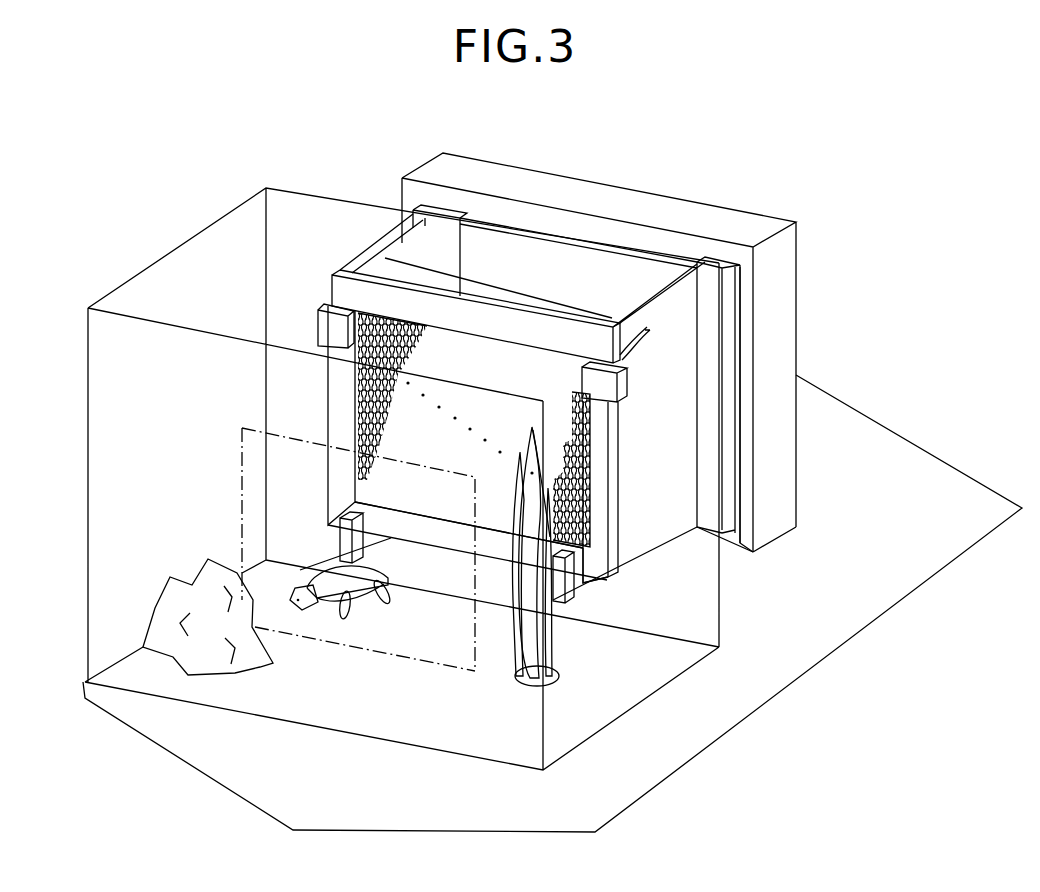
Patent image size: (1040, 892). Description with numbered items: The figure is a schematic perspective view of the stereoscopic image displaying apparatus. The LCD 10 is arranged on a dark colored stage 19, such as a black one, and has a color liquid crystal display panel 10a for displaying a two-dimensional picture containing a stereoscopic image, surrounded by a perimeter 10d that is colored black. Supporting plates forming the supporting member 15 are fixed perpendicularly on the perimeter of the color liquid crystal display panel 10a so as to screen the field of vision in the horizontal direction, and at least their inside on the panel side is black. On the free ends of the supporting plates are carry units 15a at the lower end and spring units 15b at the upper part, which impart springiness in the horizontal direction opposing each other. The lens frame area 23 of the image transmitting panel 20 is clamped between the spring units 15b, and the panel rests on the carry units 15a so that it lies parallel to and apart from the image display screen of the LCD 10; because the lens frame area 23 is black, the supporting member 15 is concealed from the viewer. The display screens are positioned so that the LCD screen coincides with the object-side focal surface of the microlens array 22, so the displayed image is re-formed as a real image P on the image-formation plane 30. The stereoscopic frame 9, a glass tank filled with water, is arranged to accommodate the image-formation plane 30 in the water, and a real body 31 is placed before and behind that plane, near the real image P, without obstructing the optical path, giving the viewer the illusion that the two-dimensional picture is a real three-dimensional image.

The stereoscopic frame 9 is at (266, 188).
The LCD 10 is at (597, 197).
The color liquid crystal display panel 10a is at (502, 262).
The perimeter 10d is at (673, 233).
The supporting member 15 is at (368, 255).
The carry unit 15a is at (340, 538).
The spring unit 15b is at (330, 322).
The stage 19 is at (803, 663).
The image transmitting panel 20 is at (325, 381).
The microlens array 22 is at (525, 407).
The lens frame area 23 is at (600, 526).
The image-formation plane 30 is at (430, 668).
The real body 31 is at (262, 665).
The real image P is at (367, 598).